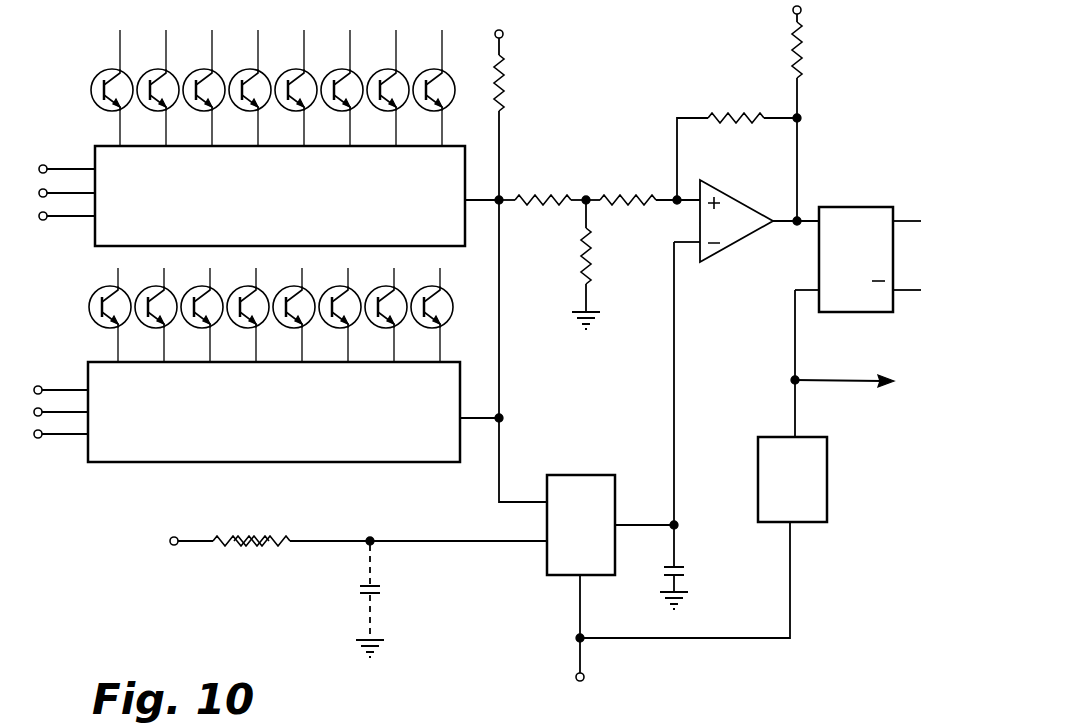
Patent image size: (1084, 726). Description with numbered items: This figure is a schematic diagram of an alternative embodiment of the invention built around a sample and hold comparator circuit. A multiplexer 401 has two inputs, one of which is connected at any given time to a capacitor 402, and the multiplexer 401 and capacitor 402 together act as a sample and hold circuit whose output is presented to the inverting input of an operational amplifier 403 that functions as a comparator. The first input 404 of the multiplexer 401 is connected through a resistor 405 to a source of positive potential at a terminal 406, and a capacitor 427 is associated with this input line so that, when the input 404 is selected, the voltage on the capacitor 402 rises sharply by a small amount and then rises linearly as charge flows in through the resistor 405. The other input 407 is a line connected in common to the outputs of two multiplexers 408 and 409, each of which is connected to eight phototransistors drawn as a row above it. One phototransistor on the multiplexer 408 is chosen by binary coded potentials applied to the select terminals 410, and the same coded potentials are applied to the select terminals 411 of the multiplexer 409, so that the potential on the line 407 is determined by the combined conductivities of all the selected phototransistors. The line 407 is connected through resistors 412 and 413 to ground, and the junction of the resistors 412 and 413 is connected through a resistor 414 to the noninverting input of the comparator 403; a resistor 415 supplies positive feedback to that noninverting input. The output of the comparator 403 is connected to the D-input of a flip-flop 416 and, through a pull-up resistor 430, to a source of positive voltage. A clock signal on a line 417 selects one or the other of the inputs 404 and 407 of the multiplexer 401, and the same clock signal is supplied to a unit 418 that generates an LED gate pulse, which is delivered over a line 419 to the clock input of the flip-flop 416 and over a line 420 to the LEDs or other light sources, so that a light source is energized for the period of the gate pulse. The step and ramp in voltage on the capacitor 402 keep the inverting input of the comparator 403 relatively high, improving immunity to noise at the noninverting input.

The multiplexer 401 is at (591, 481).
The capacitor 402 is at (684, 563).
The operational amplifier 403 is at (730, 238).
The first input 404 is at (497, 528).
The resistor 405 is at (246, 536).
The terminal 406 is at (186, 522).
The other input 407 is at (516, 500).
The multiplexer 408 is at (330, 210).
The multiplexer 409 is at (346, 424).
The select terminals 410 is at (78, 226).
The select terminals 411 is at (65, 438).
The resistor 412 is at (562, 176).
The resistor 413 is at (505, 84).
The resistor 414 is at (648, 176).
The resistor 415 is at (757, 115).
The flip-flop 416 is at (876, 208).
The line 417 is at (580, 650).
The unit 418 is at (829, 509).
The line 419 is at (795, 352).
The line 420 is at (839, 381).
The capacitor 427 is at (372, 584).
The pull-up resistor 430 is at (806, 56).